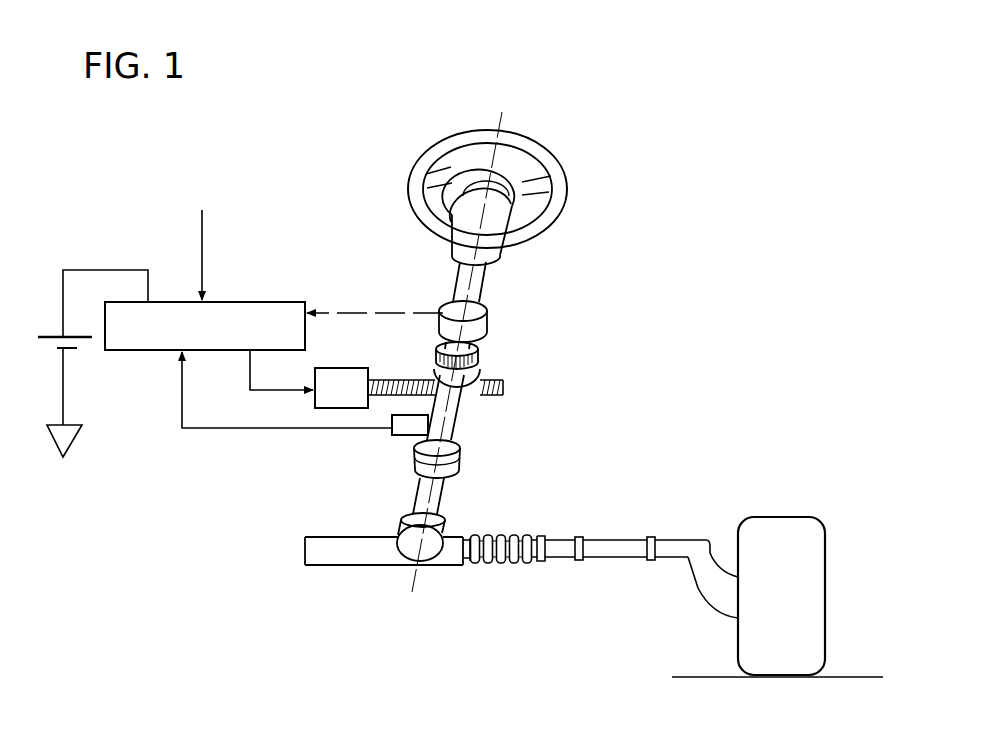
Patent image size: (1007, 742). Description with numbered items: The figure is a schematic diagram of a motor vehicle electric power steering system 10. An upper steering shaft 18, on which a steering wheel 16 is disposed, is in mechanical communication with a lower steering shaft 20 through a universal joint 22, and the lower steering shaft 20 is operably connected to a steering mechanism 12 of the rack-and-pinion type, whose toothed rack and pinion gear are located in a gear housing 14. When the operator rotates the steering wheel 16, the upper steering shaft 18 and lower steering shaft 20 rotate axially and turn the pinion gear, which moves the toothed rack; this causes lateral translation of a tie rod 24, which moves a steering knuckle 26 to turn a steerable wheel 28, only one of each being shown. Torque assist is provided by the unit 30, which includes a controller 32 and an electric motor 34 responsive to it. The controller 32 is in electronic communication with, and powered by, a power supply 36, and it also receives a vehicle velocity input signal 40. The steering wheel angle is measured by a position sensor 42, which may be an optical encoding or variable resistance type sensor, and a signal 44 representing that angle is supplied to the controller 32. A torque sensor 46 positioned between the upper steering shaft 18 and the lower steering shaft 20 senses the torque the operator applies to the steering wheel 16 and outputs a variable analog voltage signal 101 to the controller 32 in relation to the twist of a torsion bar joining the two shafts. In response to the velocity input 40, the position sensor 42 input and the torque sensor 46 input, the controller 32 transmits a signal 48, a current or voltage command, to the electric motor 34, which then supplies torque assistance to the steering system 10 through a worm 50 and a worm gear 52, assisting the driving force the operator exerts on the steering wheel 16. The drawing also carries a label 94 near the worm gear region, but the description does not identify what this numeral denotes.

The electric power steering system 10 is at (627, 140).
The steering mechanism 12 is at (510, 577).
The gear housing 14 is at (437, 526).
The steering wheel 16 is at (523, 134).
The upper steering shaft 18 is at (495, 268).
The lower steering shaft 20 is at (447, 487).
The universal joint 22 is at (461, 450).
The tie rod 24 is at (610, 545).
The steering knuckle 26 is at (705, 604).
The steerable wheel 28 is at (807, 609).
The electric power steering assist unit 30 is at (313, 240).
The controller 32 is at (250, 302).
The electric motor 34 is at (340, 368).
The power supply 36 is at (56, 334).
The vehicle velocity input signal 40 is at (203, 252).
The position sensor 42 is at (393, 434).
The steering wheel angle signal 44 is at (248, 430).
The torque sensor 46 is at (487, 312).
The motor command signal 48 is at (249, 372).
The worm 50 is at (505, 387).
The worm gear 52 is at (474, 368).
The gear assembly 94 is at (579, 349).
The variable analog voltage signal 101 is at (368, 307).